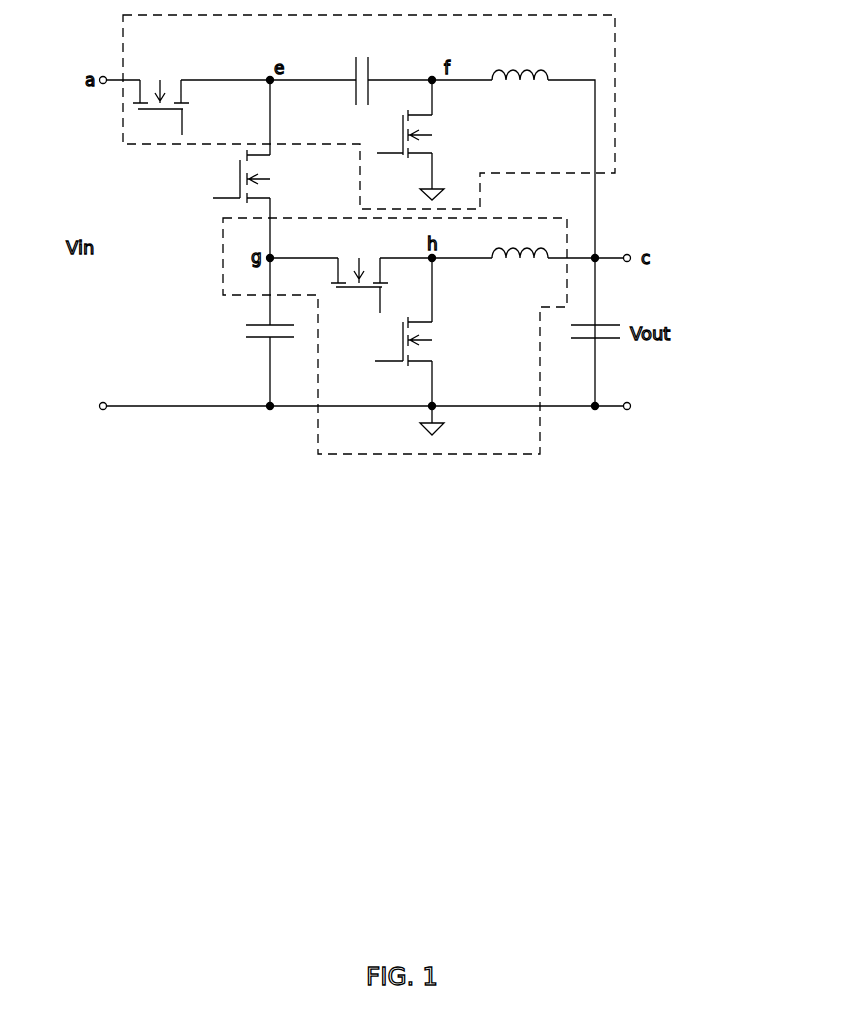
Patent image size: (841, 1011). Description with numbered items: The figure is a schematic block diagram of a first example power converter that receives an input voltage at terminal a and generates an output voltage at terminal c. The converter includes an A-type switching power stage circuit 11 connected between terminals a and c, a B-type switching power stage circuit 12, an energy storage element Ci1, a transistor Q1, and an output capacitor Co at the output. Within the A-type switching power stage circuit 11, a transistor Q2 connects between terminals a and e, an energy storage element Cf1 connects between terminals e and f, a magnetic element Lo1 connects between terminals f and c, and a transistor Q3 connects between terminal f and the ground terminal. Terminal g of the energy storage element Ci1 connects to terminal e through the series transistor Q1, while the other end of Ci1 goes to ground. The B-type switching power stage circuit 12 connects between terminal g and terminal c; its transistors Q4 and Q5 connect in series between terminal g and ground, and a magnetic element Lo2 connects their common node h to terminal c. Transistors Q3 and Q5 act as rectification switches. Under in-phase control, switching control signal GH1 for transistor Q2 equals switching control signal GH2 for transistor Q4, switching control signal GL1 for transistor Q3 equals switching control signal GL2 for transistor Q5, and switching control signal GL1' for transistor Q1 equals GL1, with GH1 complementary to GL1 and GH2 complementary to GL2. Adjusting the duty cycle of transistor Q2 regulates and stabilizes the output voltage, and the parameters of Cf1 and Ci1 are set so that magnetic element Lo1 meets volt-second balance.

The A-type switching power stage circuit 11 is at (614, 95).
The B-type switching power stage circuit 12 is at (318, 425).
The transistor Q1 is at (261, 176).
The transistor Q2 is at (161, 93).
The transistor Q3 is at (427, 134).
The transistor Q4 is at (359, 271).
The transistor Q5 is at (420, 341).
The energy storage element Cf1 is at (364, 68).
The energy storage element Ci1 is at (248, 334).
The output capacitor Co is at (588, 347).
The magnetic element Lo1 is at (520, 61).
The magnetic element Lo2 is at (520, 265).
The switching control signal GH1 is at (147, 130).
The switching control signal GH2 is at (349, 303).
The switching control signal GL1 is at (376, 131).
The switching control signal GL1' is at (201, 179).
The switching control signal GL2 is at (374, 341).